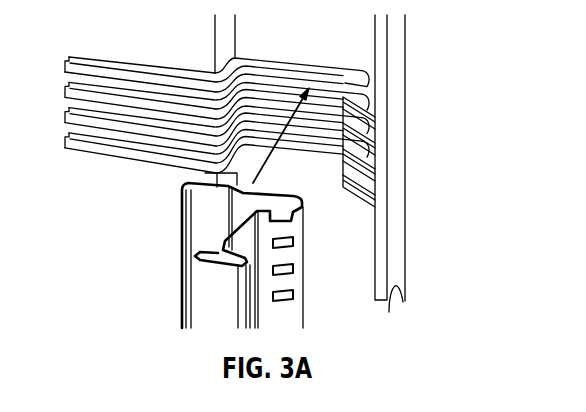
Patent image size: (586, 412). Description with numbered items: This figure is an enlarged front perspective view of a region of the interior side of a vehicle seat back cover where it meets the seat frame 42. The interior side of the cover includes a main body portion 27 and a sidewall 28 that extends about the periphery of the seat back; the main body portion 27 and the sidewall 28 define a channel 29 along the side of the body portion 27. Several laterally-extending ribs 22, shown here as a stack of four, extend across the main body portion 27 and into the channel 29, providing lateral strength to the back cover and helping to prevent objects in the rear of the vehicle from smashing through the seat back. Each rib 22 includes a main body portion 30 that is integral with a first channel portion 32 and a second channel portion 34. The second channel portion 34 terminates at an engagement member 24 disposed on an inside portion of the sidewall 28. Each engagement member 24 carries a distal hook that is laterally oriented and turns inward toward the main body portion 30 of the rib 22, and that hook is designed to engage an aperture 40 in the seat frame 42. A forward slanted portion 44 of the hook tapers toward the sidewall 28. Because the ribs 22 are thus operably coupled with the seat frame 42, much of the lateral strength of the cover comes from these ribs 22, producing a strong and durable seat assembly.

The rib 22 is at (91, 158).
The engagement member 24 is at (367, 130).
The main body portion 27 is at (177, 44).
The sidewall 28 is at (397, 66).
The channel 29 is at (325, 51).
The main body portion 30 is at (113, 52).
The first channel portion 32 is at (200, 164).
The second channel portion 34 is at (287, 61).
The aperture 40 is at (296, 243).
The seat frame 42 is at (220, 303).
The forward slanted portion 44 is at (344, 141).